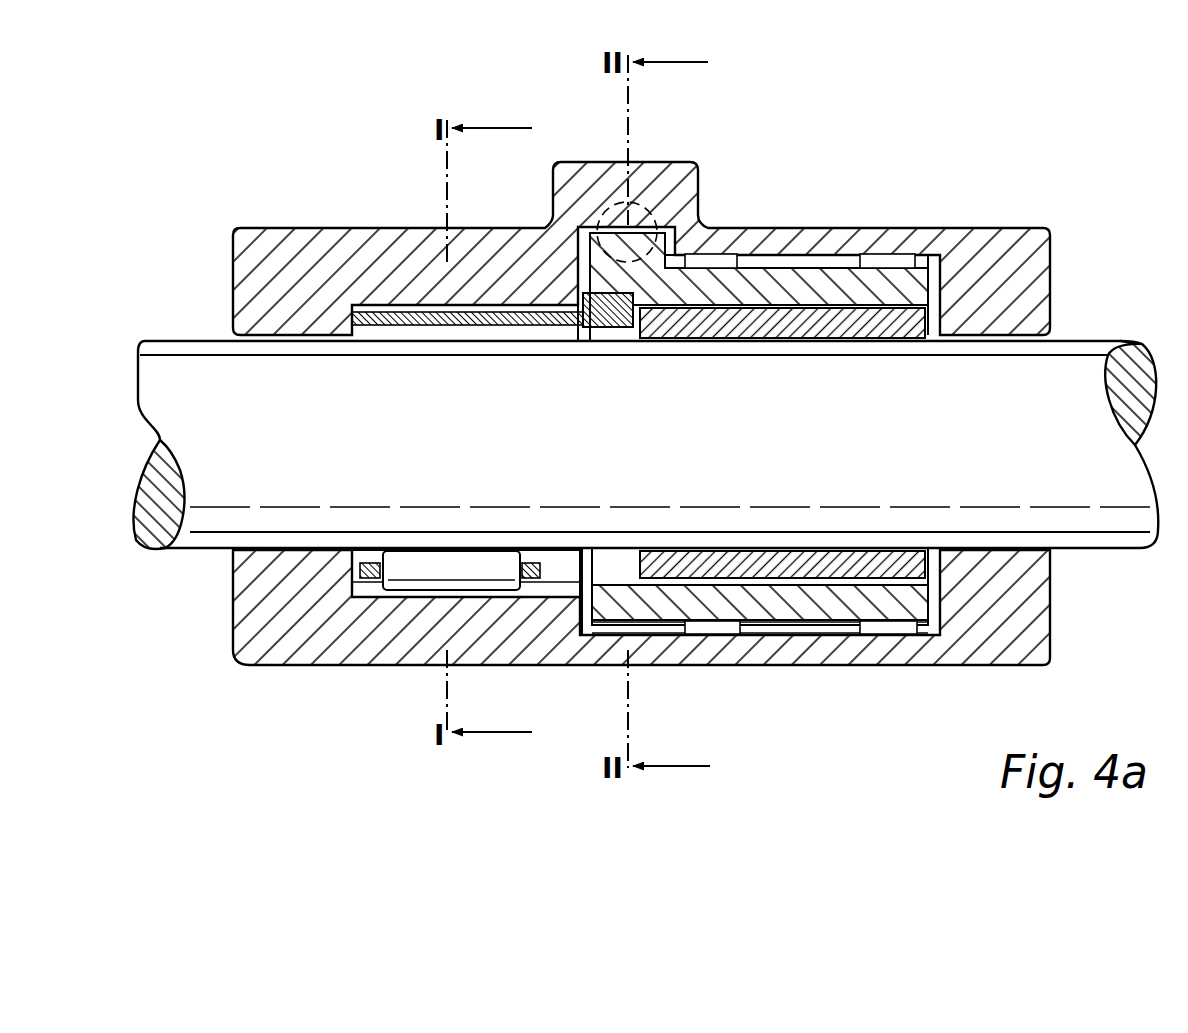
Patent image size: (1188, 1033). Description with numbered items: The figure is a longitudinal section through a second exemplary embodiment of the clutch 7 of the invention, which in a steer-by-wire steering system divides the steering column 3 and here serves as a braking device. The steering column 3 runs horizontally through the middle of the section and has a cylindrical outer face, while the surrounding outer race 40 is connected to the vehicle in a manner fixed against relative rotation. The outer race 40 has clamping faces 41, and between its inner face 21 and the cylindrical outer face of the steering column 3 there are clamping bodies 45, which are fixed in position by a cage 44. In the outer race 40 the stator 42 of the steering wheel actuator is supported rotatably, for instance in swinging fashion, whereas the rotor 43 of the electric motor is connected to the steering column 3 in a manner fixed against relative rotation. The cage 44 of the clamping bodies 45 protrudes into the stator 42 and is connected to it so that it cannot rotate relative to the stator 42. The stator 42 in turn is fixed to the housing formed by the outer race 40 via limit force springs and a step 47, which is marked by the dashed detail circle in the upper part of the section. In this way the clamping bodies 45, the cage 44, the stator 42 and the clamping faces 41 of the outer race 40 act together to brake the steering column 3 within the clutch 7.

The steering column 3 is at (1075, 362).
The clutch 7 is at (700, 680).
The inner face 21 is at (535, 592).
The outer race 40 is at (245, 592).
The clamping faces 41 is at (358, 583).
The stator 42 is at (790, 300).
The rotor 43 is at (828, 320).
The cage 44 is at (497, 308).
The clamping bodies 45 is at (482, 592).
The step 47 is at (633, 245).